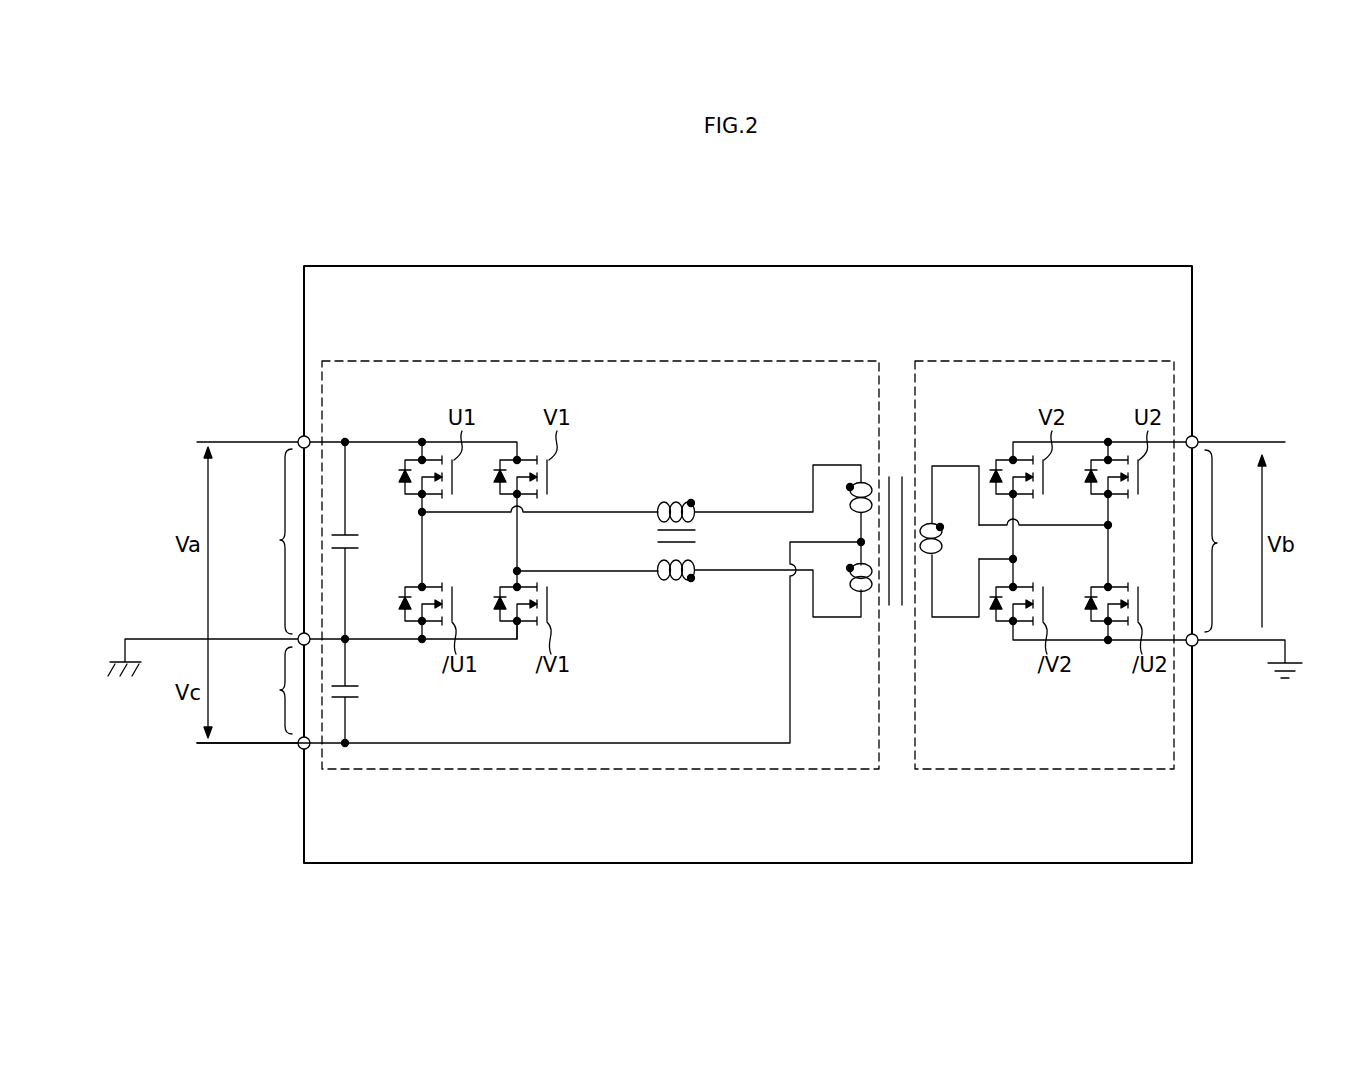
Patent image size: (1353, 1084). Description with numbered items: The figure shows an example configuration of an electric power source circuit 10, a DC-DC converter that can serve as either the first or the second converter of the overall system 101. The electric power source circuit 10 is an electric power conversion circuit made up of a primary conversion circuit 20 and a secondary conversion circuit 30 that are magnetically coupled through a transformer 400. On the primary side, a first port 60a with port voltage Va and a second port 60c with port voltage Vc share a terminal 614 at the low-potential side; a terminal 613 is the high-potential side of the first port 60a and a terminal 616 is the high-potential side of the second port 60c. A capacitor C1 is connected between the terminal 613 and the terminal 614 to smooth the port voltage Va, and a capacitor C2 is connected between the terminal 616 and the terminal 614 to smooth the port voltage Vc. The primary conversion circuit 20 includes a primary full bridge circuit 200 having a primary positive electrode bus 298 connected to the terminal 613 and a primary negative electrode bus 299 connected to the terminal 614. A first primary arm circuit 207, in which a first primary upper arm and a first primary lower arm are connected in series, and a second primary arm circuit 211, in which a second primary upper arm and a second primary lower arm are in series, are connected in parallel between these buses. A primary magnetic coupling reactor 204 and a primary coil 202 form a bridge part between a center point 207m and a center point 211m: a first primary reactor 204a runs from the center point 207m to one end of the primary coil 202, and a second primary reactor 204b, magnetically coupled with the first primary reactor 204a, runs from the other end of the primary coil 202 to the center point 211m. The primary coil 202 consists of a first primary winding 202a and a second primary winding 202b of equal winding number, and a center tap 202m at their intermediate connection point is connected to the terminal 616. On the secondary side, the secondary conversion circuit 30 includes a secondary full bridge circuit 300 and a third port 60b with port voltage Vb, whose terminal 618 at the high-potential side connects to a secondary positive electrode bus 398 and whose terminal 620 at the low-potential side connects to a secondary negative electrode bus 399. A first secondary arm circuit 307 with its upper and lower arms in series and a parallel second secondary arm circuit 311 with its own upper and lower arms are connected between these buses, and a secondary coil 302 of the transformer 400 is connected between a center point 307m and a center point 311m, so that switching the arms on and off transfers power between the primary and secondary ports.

The power conversion system 101 is at (196, 233).
The electric power source circuit 10 is at (748, 266).
The primary conversion circuit 20 is at (600, 523).
The secondary conversion circuit 30 is at (1044, 524).
The primary full bridge circuit 200 is at (601, 360).
The secondary full bridge circuit 300 is at (1045, 360).
The transformer 400 is at (862, 487).
The primary coil 202 is at (809, 517).
The first primary winding 202a is at (846, 487).
The second primary winding 202b is at (847, 592).
The center tap 202m is at (857, 541).
The primary magnetic coupling reactor 204 is at (679, 527).
The first primary reactor 204a is at (670, 500).
The second primary reactor 204b is at (674, 582).
The first primary arm circuit 207 is at (403, 588).
The center point of the first primary arm circuit 207m is at (418, 513).
The second primary arm circuit 211 is at (486, 595).
The center point of the second primary arm circuit 211m is at (514, 571).
The primary positive electrode bus 298 is at (394, 439).
The primary negative electrode bus 299 is at (398, 643).
The secondary coil 302 is at (943, 526).
The first secondary arm circuit 307 is at (1127, 588).
The center point of the first secondary arm circuit 307m is at (1111, 527).
The second secondary arm circuit 311 is at (1047, 595).
The center point of the second secondary arm circuit 311m is at (1016, 559).
The secondary positive electrode bus 398 is at (1085, 439).
The secondary negative electrode bus 399 is at (1088, 643).
The first port 60a is at (264, 541).
The third port 60b is at (1232, 541).
The second port 60c is at (265, 690).
The terminal 613 is at (300, 437).
The terminal 614 is at (298, 637).
The terminal 616 is at (301, 749).
The terminal 618 is at (1196, 438).
The terminal 620 is at (1196, 646).
The capacitor C1 is at (352, 531).
The capacitor C2 is at (352, 686).